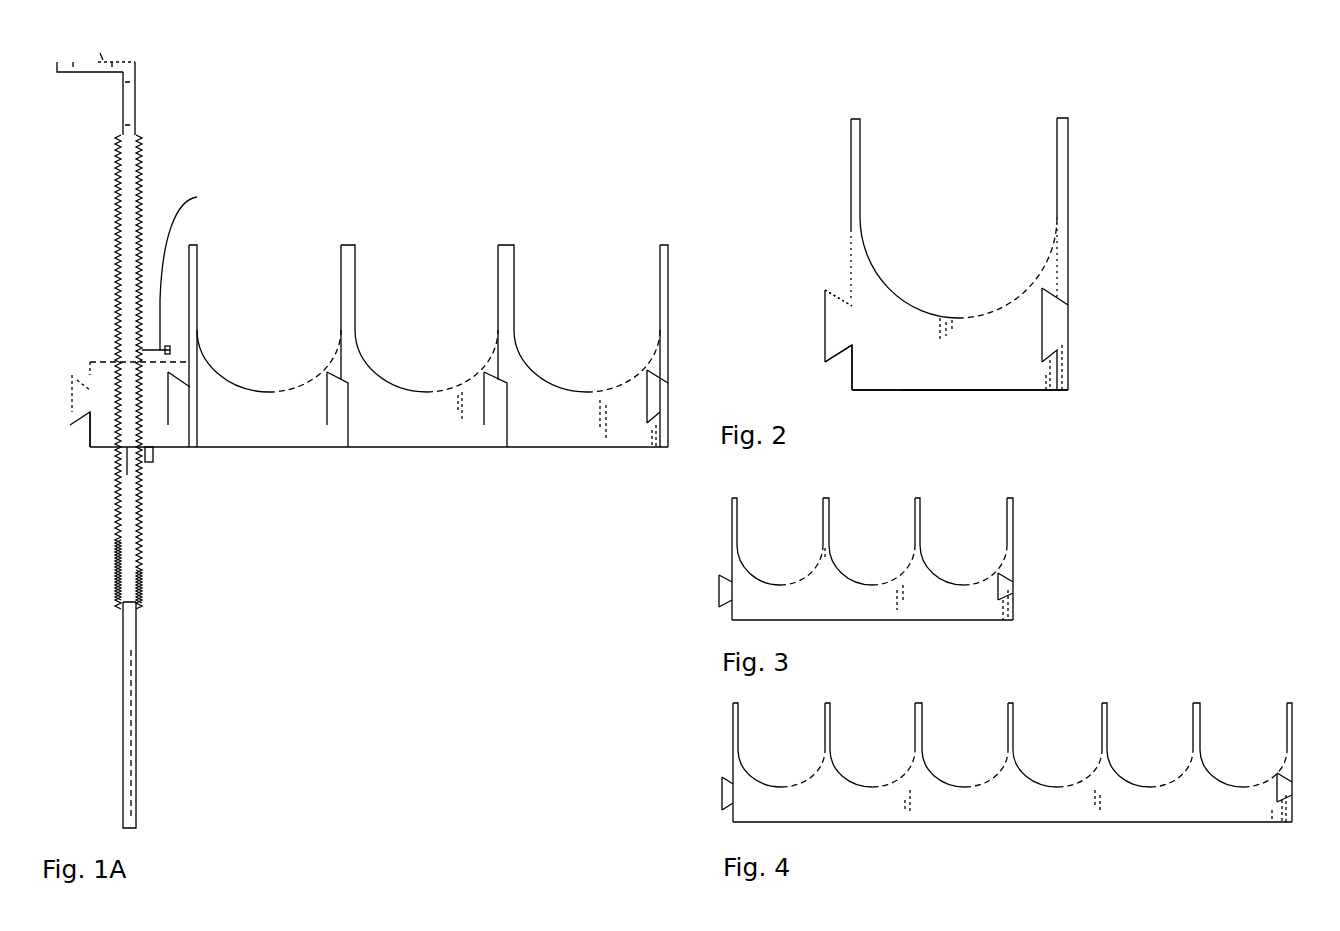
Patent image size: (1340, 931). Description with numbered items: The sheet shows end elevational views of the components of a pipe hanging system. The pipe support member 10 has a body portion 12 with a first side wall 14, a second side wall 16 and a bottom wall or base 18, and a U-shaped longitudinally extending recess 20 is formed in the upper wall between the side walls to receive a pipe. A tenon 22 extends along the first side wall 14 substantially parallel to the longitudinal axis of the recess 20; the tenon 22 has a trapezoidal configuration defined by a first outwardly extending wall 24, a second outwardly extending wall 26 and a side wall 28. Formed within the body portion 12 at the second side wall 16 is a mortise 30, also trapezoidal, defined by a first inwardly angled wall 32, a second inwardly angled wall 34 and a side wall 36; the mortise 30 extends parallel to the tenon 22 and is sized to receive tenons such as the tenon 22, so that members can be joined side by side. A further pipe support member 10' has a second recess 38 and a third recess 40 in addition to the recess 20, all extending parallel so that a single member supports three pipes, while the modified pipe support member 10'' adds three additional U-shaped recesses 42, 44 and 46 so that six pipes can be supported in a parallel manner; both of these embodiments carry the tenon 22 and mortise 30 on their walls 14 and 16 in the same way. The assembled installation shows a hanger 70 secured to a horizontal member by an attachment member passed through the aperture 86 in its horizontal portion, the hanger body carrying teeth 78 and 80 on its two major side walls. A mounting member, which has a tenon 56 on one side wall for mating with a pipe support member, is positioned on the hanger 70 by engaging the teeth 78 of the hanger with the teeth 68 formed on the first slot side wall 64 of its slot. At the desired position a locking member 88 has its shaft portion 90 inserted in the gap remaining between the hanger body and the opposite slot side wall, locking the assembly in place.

In FIG. 1A, the pipe support member 10 is at (379, 346).
In FIG. 2, the pipe support member 10 is at (1015, 216).
In FIG. 3, the pipe support member 10' is at (921, 540).
In FIG. 4, the modified pipe support member 10'' is at (1007, 717).
In FIG. 2, the body portion 12 is at (985, 368).
In FIG. 1A, the first side wall 14 is at (190, 262).
In FIG. 2, the first side wall 14 is at (851, 158).
In FIG. 3, the first side wall 14 is at (732, 530).
In FIG. 1A, the second side wall 16 is at (668, 280).
In FIG. 2, the second side wall 16 is at (1068, 225).
In FIG. 3, the second side wall 16 is at (1013, 556).
In FIG. 2, the bottom wall or base 18 is at (930, 392).
In FIG. 2, the U-shaped longitudinally extending recess 20 is at (951, 152).
In FIG. 3, the U-shaped longitudinally extending recess 20 is at (782, 544).
In FIG. 4, the U-shaped longitudinally extending recess 20 is at (782, 750).
In FIG. 1A, the tenon 22 is at (178, 405).
In FIG. 2, the tenon 22 is at (817, 283).
In FIG. 3, the tenon 22 is at (719, 596).
In FIG. 2, the first outwardly extending wall 24 is at (832, 296).
In FIG. 2, the second outwardly extending wall 26 is at (842, 355).
In FIG. 2, the side wall 28 is at (823, 340).
In FIG. 1A, the mortise 30 is at (660, 402).
In FIG. 2, the first inwardly angled wall 32 is at (1068, 300).
In FIG. 2, the second inwardly angled wall 34 is at (1068, 352).
In FIG. 2, the side wall 36 is at (1052, 333).
In FIG. 3, the second recess 38 is at (872, 544).
In FIG. 4, the second recess 38 is at (873, 747).
In FIG. 3, the third recess 40 is at (970, 544).
In FIG. 4, the third recess 40 is at (962, 747).
In FIG. 4, the additional U-shaped recess 42 is at (1055, 740).
In FIG. 4, the additional U-shaped recess 44 is at (1149, 740).
In FIG. 4, the additional U-shaped recess 46 is at (1245, 740).
In FIG. 1A, the tenon 56 is at (72, 424).
In FIG. 1A, the first slot side wall 64 is at (110, 432).
In FIG. 1A, the teeth 68 is at (112, 373).
In FIG. 1A, the hanger 70 is at (135, 121).
In FIG. 1A, the teeth 78 is at (118, 555).
In FIG. 1A, the teeth 80 is at (140, 596).
In FIG. 1A, the aperture 86 is at (102, 52).
In FIG. 1A, the locking member 88 is at (180, 275).
In FIG. 1A, the shaft portion 90 is at (150, 464).